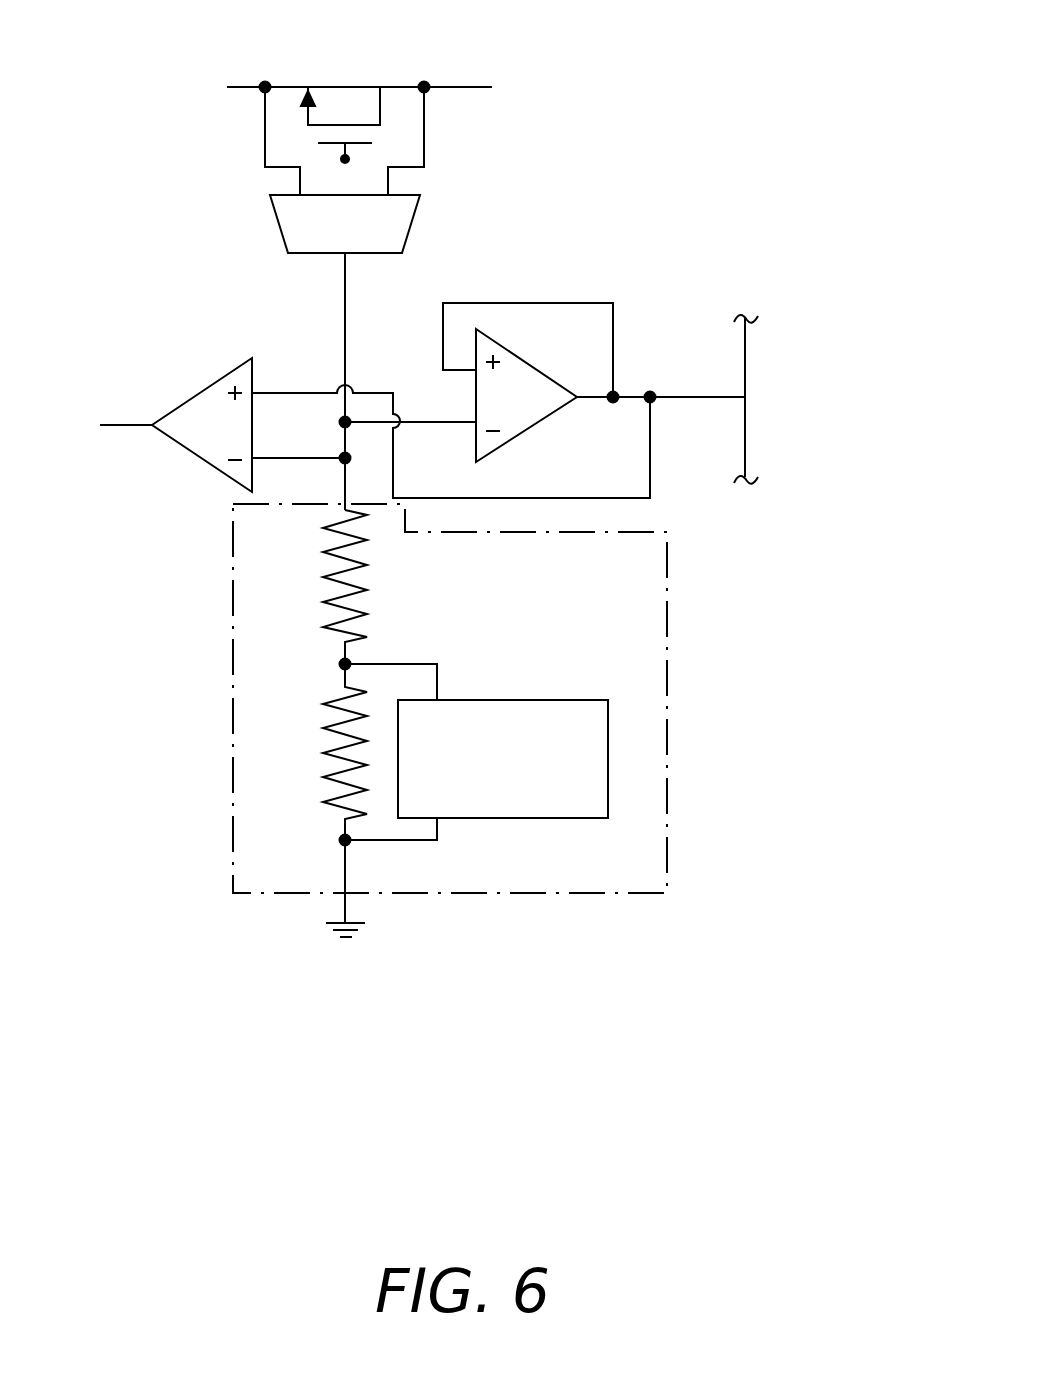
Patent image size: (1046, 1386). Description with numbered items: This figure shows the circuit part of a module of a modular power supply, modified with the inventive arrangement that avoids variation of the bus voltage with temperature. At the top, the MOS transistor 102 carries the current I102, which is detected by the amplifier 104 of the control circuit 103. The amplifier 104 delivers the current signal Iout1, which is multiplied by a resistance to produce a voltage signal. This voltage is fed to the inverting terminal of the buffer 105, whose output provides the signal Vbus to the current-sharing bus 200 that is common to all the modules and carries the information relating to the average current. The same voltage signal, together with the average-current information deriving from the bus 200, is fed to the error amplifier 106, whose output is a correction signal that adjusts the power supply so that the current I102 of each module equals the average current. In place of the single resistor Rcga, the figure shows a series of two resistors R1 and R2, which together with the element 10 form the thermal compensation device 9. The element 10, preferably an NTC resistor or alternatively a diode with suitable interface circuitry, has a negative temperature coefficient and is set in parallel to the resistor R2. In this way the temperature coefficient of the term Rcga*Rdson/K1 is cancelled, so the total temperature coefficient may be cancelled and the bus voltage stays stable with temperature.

The MOS transistor 102 is at (343, 98).
The current flowing through the transistor I102 is at (465, 88).
The control circuit 103 is at (653, 192).
The amplifier 104 is at (277, 227).
The buffer 105 is at (533, 382).
The error amplifier 106 is at (198, 411).
The current-sharing bus 200 is at (745, 427).
The bus signal Vbus is at (613, 390).
The output current signal of the amplifier Iout1 is at (346, 304).
The resistor R1 is at (309, 587).
The resistor R2 is at (309, 752).
The temperature-dependent element 10 is at (503, 818).
The thermal compensation device 9 is at (668, 795).